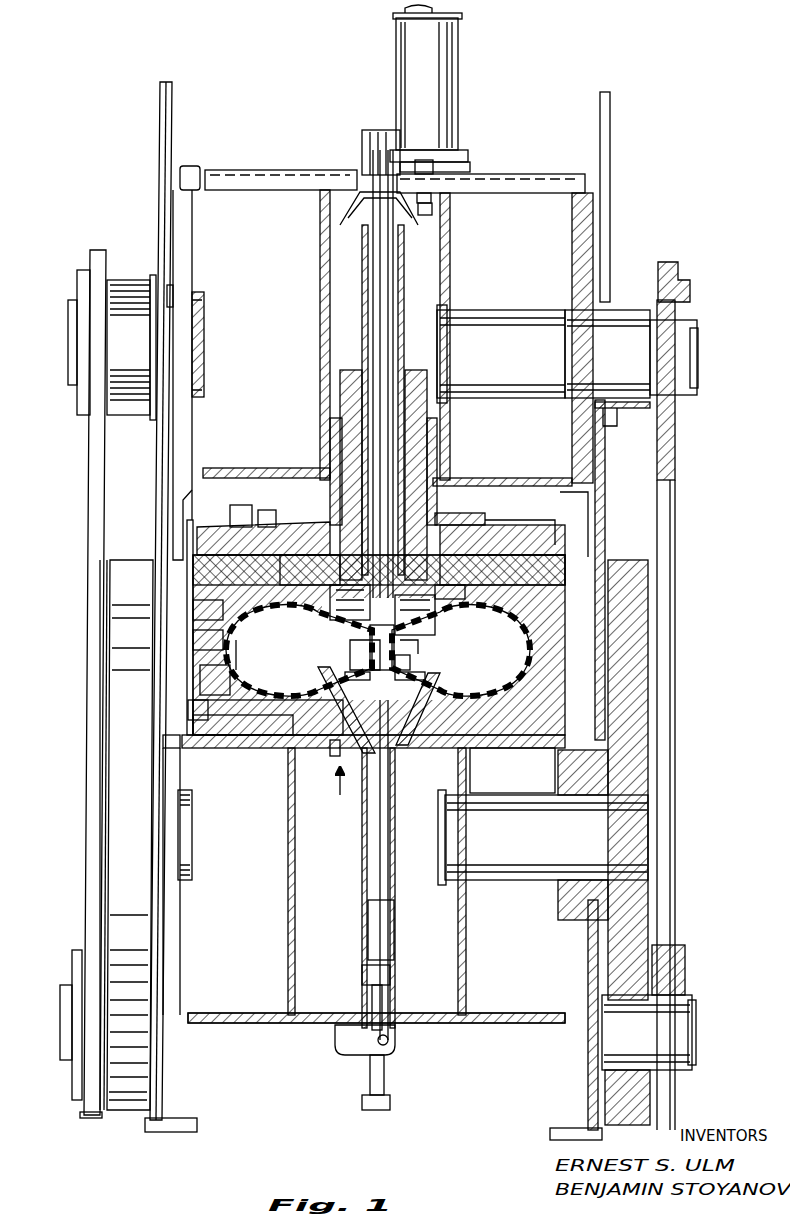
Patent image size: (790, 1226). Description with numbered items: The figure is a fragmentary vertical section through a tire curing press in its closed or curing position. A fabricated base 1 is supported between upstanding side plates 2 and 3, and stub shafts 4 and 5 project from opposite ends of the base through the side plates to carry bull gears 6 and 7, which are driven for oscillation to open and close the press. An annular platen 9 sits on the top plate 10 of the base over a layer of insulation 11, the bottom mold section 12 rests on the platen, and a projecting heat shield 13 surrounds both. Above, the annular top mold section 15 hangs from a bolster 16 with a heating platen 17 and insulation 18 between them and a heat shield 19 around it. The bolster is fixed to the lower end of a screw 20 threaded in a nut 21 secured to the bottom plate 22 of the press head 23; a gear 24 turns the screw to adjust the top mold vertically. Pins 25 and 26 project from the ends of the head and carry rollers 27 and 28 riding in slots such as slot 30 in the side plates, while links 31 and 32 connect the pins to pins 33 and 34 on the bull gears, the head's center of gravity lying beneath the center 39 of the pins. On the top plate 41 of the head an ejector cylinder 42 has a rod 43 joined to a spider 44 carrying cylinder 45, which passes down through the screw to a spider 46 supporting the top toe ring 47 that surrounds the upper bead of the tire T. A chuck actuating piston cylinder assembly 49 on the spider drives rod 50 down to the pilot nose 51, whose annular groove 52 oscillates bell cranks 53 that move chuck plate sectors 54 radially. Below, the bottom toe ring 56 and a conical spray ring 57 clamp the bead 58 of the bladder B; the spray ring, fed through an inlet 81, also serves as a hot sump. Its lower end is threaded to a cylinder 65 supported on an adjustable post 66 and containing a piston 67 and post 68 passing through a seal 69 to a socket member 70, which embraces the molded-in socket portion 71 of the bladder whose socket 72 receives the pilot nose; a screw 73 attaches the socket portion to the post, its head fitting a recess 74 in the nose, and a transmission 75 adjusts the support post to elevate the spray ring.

The fabricated base 1 is at (482, 1030).
The side plate 2 is at (160, 1080).
The side plate 3 is at (590, 1086).
The stub shaft 4 is at (190, 815).
The stub shaft 5 is at (543, 835).
The bull gear 6 is at (100, 768).
The bull gear 7 is at (640, 767).
The annular platen 9 is at (212, 734).
The top plate 10 is at (250, 750).
The layer of insulation 11 is at (512, 748).
The bottom mold section 12 is at (205, 688).
The heat shield 13 is at (190, 718).
The top mold section 15 is at (192, 610).
The bolster 16 is at (211, 535).
The heating platen 17 is at (379, 645).
The layer of insulation 18 is at (193, 560).
The heat shield 19 is at (190, 640).
The screw 20 is at (340, 386).
The nut 21 is at (333, 435).
The bottom plate 22 is at (227, 468).
The press head 23 is at (232, 163).
The gear 24 is at (462, 513).
The pin 25 is at (204, 340).
The pin 26 is at (489, 306).
The roller 27 is at (172, 292).
The roller 28 is at (603, 314).
The slot 30 is at (610, 219).
The link 31 is at (90, 488).
The link 32 is at (672, 498).
The pin 33 is at (60, 1020).
The pin 34 is at (695, 1034).
The center of the pins 39 is at (700, 340).
The top plate 41 is at (548, 184).
The ejector cylinder 42 is at (440, 83).
The rod 43 is at (433, 196).
The spider 44 is at (433, 210).
The cylinder 45 is at (362, 308).
The spider 46 is at (310, 570).
The top toe ring 47 is at (470, 600).
The chuck actuating piston cylinder assembly 49 is at (362, 160).
The rod 50 is at (380, 254).
The pilot nose 51 is at (410, 662).
The bell crank actuating groove 52 is at (330, 600).
The bell crank 53 is at (445, 592).
The chuck plate sector 54 is at (430, 633).
The bottom toe ring 56 is at (440, 675).
The spray ring 57 is at (415, 740).
The bead 58 is at (268, 717).
The cylinder 65 is at (362, 826).
The post 66 is at (370, 1001).
The piston 67 is at (368, 972).
The post 68 is at (372, 934).
The seal 69 is at (395, 770).
The socket member 70 is at (355, 657).
The molded-in socket portion 71 is at (372, 647).
The socket 72 is at (407, 683).
The screw 73 is at (357, 688).
The recess 74 is at (416, 645).
The transmission 75 is at (395, 1078).
The inlet 81 is at (332, 753).
The bladder B is at (238, 612).
The tire T is at (240, 672).